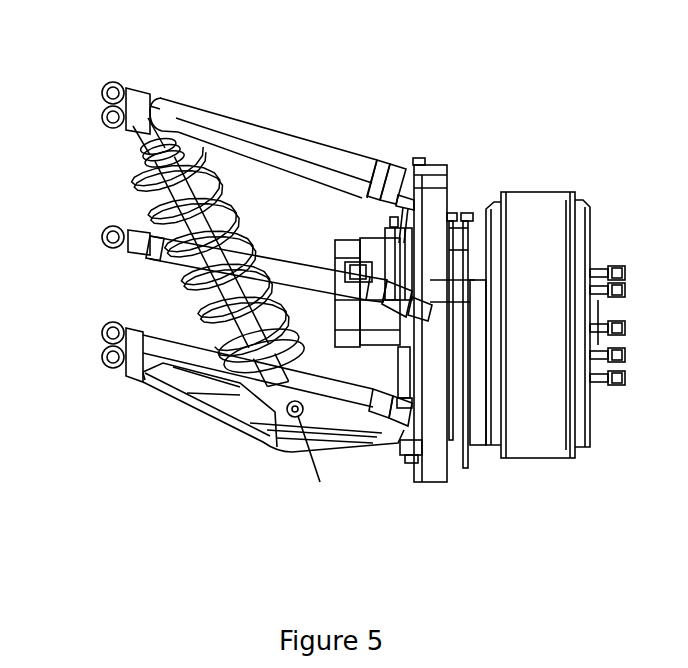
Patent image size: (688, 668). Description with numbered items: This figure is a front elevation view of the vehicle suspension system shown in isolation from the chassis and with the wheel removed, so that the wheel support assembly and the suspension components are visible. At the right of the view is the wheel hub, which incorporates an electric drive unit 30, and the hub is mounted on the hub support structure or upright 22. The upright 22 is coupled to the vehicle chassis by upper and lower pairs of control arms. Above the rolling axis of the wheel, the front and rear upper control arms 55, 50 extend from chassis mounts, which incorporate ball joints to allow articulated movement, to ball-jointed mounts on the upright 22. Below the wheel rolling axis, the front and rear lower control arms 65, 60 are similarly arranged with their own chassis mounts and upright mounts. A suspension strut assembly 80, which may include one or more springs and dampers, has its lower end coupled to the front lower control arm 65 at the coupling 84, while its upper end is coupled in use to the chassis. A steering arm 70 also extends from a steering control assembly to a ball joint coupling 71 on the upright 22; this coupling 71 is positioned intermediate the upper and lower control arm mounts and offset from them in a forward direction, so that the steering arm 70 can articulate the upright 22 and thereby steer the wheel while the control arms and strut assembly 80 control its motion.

The upright 22 is at (430, 205).
The electric drive unit 30 is at (538, 437).
The rear upper control arm 50 is at (185, 100).
The front upper control arm 55 is at (260, 154).
The rear lower control arm 60 is at (173, 340).
The front lower control arm 65 is at (143, 387).
The steering arm 70 is at (157, 230).
The ball joint coupling 71 is at (416, 306).
The suspension strut assembly 80 is at (150, 183).
The strut lower coupling 84 is at (295, 417).